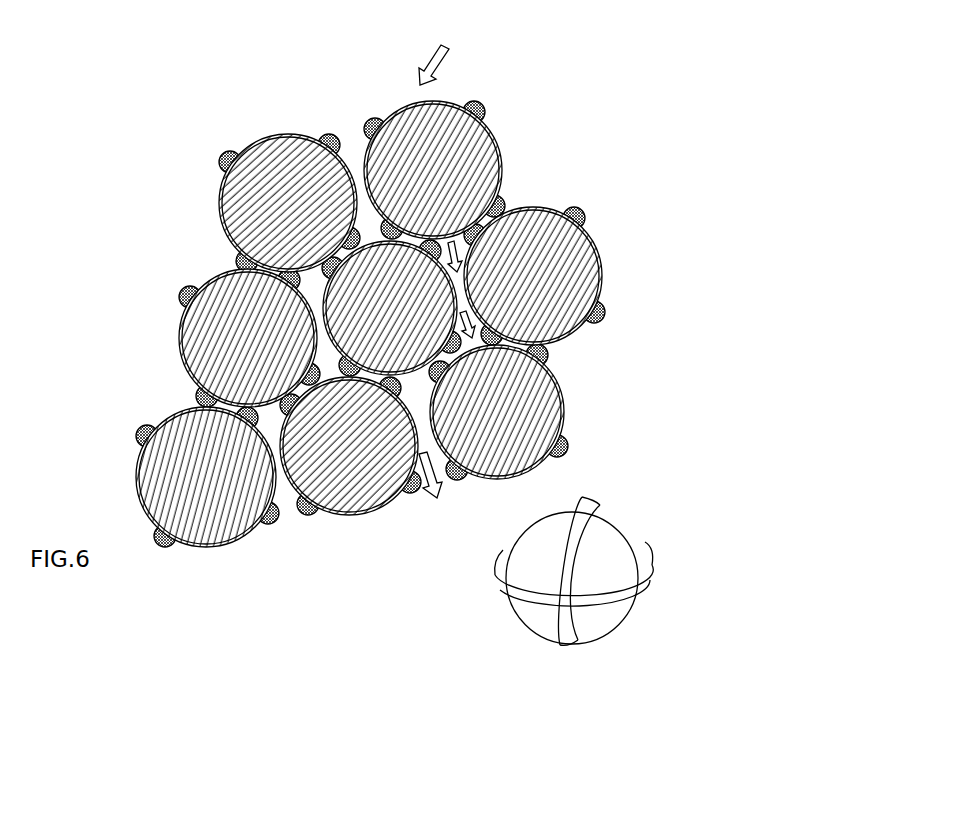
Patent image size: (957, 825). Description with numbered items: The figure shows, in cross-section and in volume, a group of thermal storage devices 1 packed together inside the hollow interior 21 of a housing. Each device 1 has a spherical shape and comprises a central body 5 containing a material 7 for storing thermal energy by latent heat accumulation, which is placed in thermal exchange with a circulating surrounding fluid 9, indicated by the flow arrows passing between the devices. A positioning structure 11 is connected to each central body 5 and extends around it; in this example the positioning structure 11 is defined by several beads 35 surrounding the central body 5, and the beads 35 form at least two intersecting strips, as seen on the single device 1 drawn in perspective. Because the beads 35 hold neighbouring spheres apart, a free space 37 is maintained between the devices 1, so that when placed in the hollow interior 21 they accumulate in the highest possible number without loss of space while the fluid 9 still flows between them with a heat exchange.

The device 1 is at (357, 297).
The central body 5 is at (253, 538).
The material for storing thermal energy 7 is at (107, 504).
The surrounding fluid 9 is at (458, 506).
The positioning structure 11 is at (320, 130).
The hollow interior 21 is at (420, 368).
The beads 35 is at (420, 349).
The free space 37 is at (468, 228).